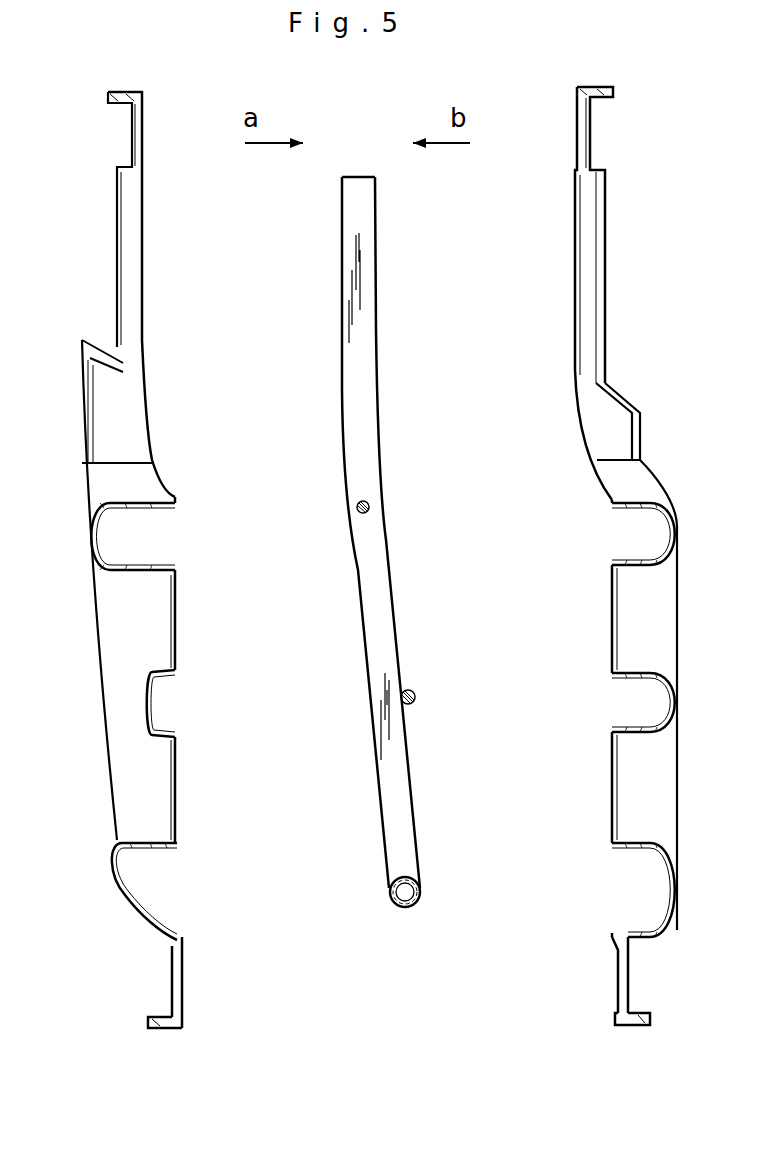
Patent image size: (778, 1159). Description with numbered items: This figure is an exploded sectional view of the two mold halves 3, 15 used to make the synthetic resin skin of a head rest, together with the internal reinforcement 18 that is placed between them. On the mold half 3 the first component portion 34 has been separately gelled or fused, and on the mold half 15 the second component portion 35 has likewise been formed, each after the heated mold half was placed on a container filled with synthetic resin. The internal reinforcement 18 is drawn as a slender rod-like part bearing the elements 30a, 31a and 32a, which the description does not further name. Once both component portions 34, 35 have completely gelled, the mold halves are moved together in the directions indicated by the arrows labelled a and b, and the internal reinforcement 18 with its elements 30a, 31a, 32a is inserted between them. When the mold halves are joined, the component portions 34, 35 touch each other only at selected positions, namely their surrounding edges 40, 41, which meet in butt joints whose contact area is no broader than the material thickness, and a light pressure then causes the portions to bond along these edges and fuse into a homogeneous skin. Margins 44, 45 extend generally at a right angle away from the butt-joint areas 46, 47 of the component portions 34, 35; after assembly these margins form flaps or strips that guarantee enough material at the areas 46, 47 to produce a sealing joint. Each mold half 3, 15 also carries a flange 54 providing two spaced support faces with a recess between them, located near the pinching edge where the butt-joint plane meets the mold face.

The mold half 3 is at (113, 259).
The mold half 15 is at (611, 278).
The internal reinforcement 18 is at (381, 304).
The pivot pin 30a is at (421, 893).
The coupling pin 31a is at (416, 697).
The coupling pin 32a is at (370, 506).
The component portion 34 is at (181, 624).
The component portion 35 is at (605, 628).
The surrounding edge 40 is at (610, 533).
The surrounding edge 41 is at (177, 534).
The margin 44 is at (185, 950).
The margin 45 is at (616, 952).
The area for forming a butt joint 46 is at (182, 937).
The area for forming a butt joint 47 is at (611, 937).
The flange 54 is at (171, 992).